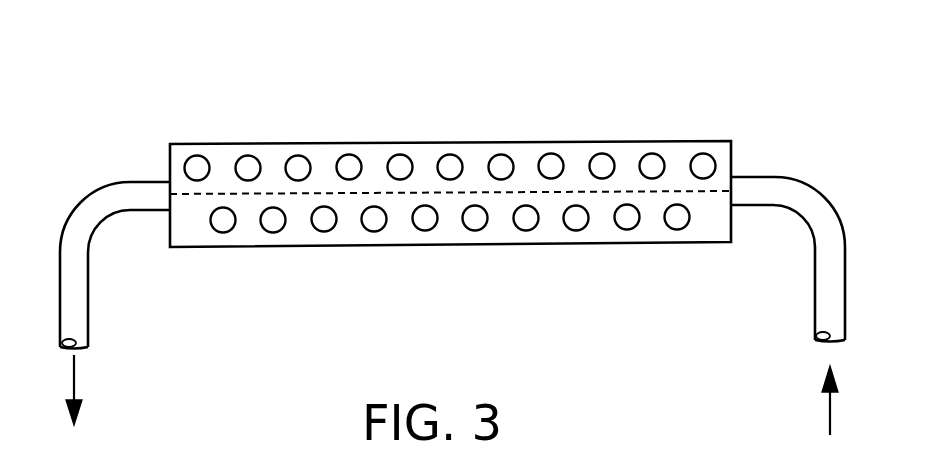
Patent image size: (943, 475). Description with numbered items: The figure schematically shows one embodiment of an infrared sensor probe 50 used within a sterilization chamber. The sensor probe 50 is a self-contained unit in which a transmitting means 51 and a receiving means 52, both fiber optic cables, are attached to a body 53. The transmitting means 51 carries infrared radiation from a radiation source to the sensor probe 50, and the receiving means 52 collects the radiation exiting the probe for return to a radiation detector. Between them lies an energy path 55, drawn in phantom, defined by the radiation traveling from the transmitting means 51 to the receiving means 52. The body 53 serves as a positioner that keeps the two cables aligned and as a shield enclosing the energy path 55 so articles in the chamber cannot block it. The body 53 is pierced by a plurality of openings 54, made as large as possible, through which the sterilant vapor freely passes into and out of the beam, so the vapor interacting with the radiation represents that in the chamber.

The sensor probe 50 is at (545, 92).
The transmitting means 51 is at (805, 185).
The receiving means 52 is at (110, 185).
The body 53 is at (268, 148).
The openings 54 is at (652, 166).
The energy path 55 is at (428, 190).